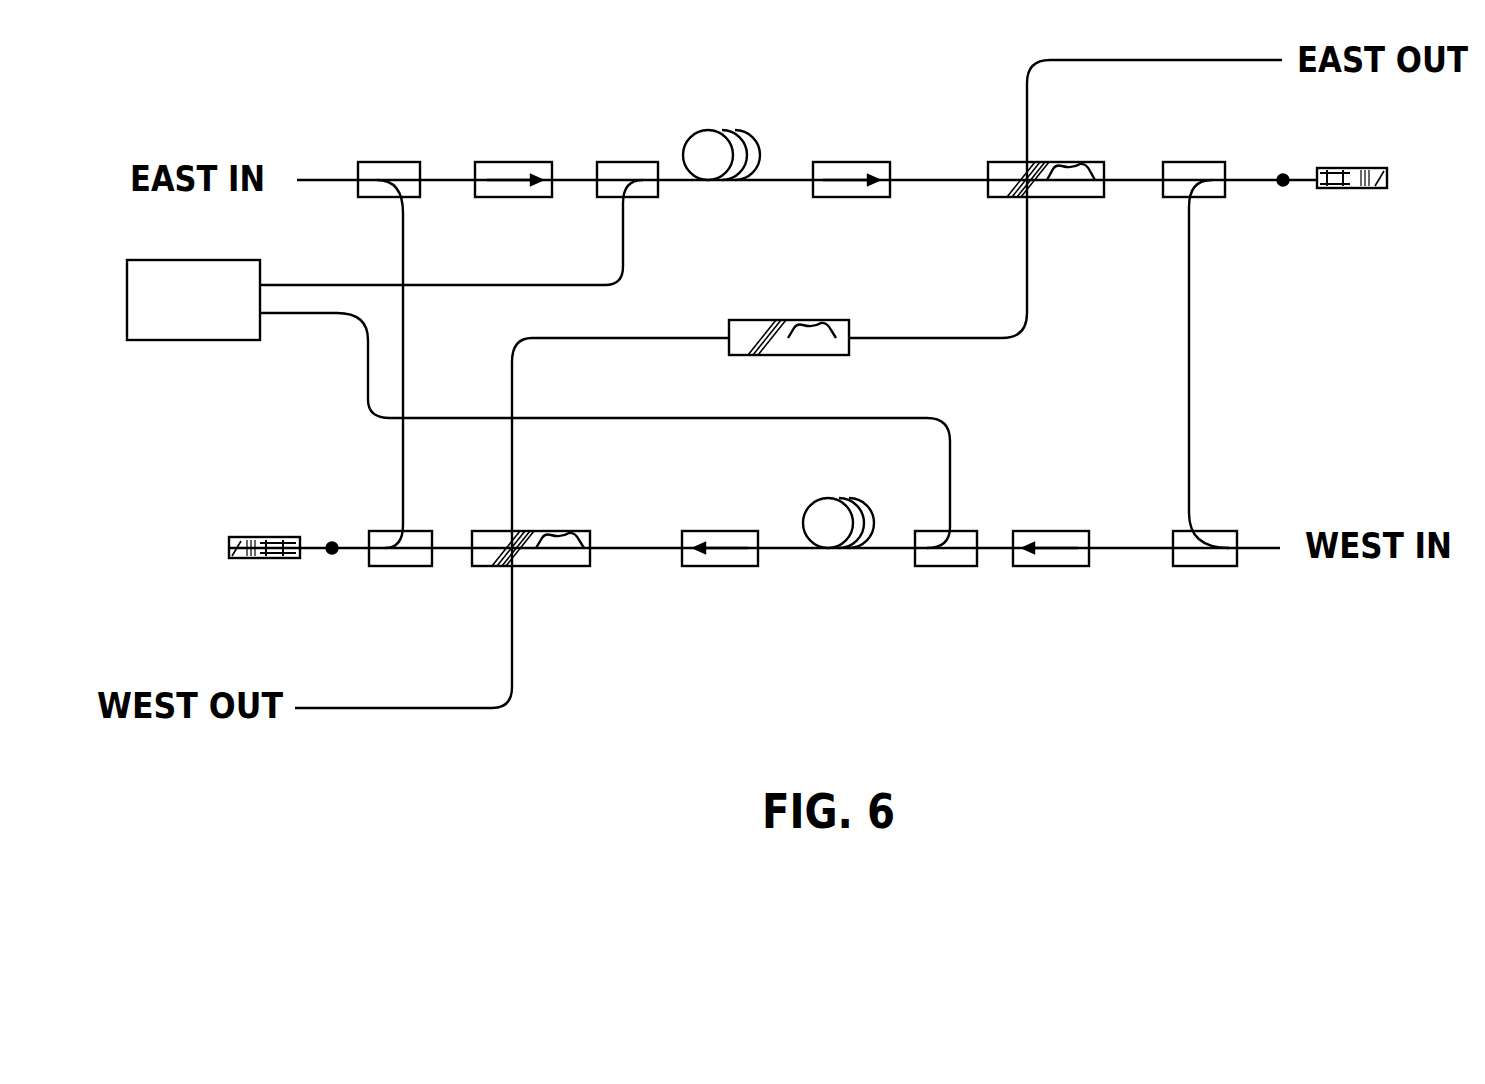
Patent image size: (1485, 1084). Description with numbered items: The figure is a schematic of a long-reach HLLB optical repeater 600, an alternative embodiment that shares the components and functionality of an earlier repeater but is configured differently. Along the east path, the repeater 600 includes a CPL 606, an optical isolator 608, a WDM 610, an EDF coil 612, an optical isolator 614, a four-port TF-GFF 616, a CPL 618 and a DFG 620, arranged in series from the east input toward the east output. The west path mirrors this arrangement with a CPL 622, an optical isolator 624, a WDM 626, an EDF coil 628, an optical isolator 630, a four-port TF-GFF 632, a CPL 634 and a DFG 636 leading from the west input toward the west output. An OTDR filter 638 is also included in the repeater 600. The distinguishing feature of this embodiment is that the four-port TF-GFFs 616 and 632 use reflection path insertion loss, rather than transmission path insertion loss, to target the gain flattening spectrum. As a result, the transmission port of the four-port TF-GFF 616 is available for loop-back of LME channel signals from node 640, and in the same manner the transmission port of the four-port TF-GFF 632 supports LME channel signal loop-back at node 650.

The long-reach HLLB optical repeater 600 is at (862, 763).
The CPL 606 is at (390, 164).
The optical isolator 608 is at (513, 209).
The WDM 610 is at (627, 156).
The EDF coil 612 is at (722, 130).
The optical isolator 614 is at (851, 209).
The 4-port TF-GFF 616 is at (1065, 154).
The CPL 618 is at (1194, 157).
The DFG 620 is at (1351, 193).
The CPL 622 is at (1205, 577).
The optical isolator 624 is at (1051, 576).
The WDM 626 is at (946, 578).
The EDF coil 628 is at (839, 497).
The optical isolator 630 is at (720, 578).
The 4-port TF-GFF 632 is at (548, 575).
The CPL 634 is at (400, 574).
The DFG 636 is at (264, 534).
The OTDR filter 638 is at (788, 351).
The node 640 is at (1278, 163).
The node 650 is at (334, 568).